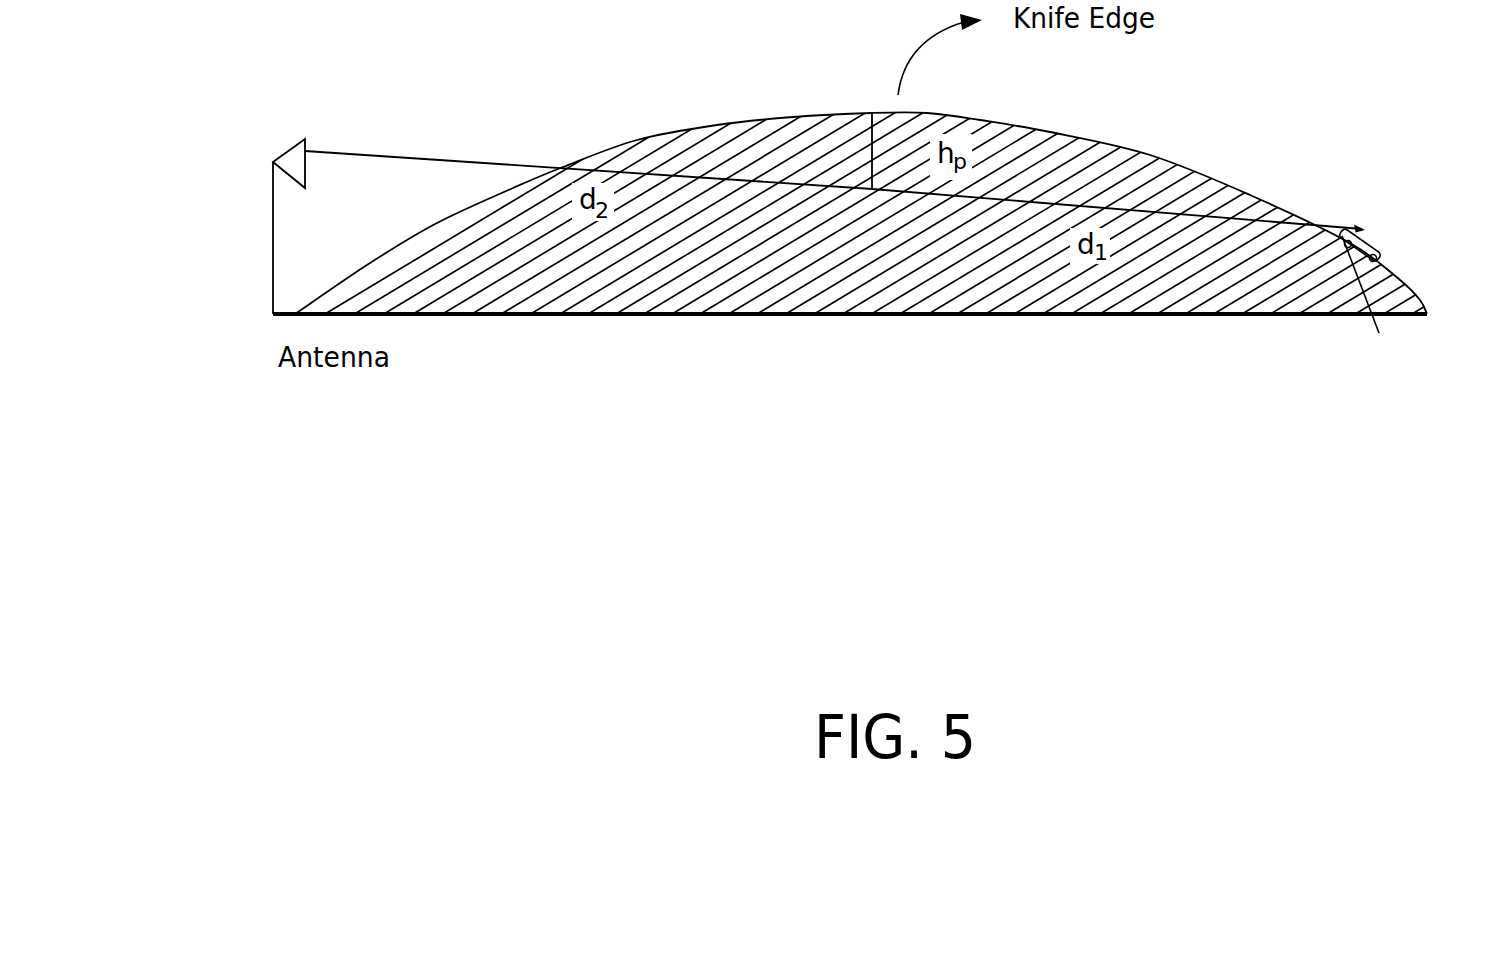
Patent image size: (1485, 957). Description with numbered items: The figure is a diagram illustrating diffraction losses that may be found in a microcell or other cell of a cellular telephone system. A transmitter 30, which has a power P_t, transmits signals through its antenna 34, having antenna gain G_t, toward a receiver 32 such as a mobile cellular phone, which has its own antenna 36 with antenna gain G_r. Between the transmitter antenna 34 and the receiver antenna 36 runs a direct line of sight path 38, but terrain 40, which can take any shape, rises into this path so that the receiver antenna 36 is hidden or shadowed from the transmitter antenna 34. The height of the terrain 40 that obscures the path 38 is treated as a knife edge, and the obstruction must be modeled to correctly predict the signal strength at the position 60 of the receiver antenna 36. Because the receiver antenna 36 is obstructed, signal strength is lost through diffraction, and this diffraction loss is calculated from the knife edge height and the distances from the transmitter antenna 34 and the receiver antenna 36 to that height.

The transmitter 30 is at (273, 253).
The receiver 32 is at (1368, 238).
The antenna 34 is at (273, 161).
The antenna 36 is at (1362, 226).
The direct line of sight path 38 is at (460, 160).
The terrain 40 is at (723, 124).
The position 60 is at (1379, 333).